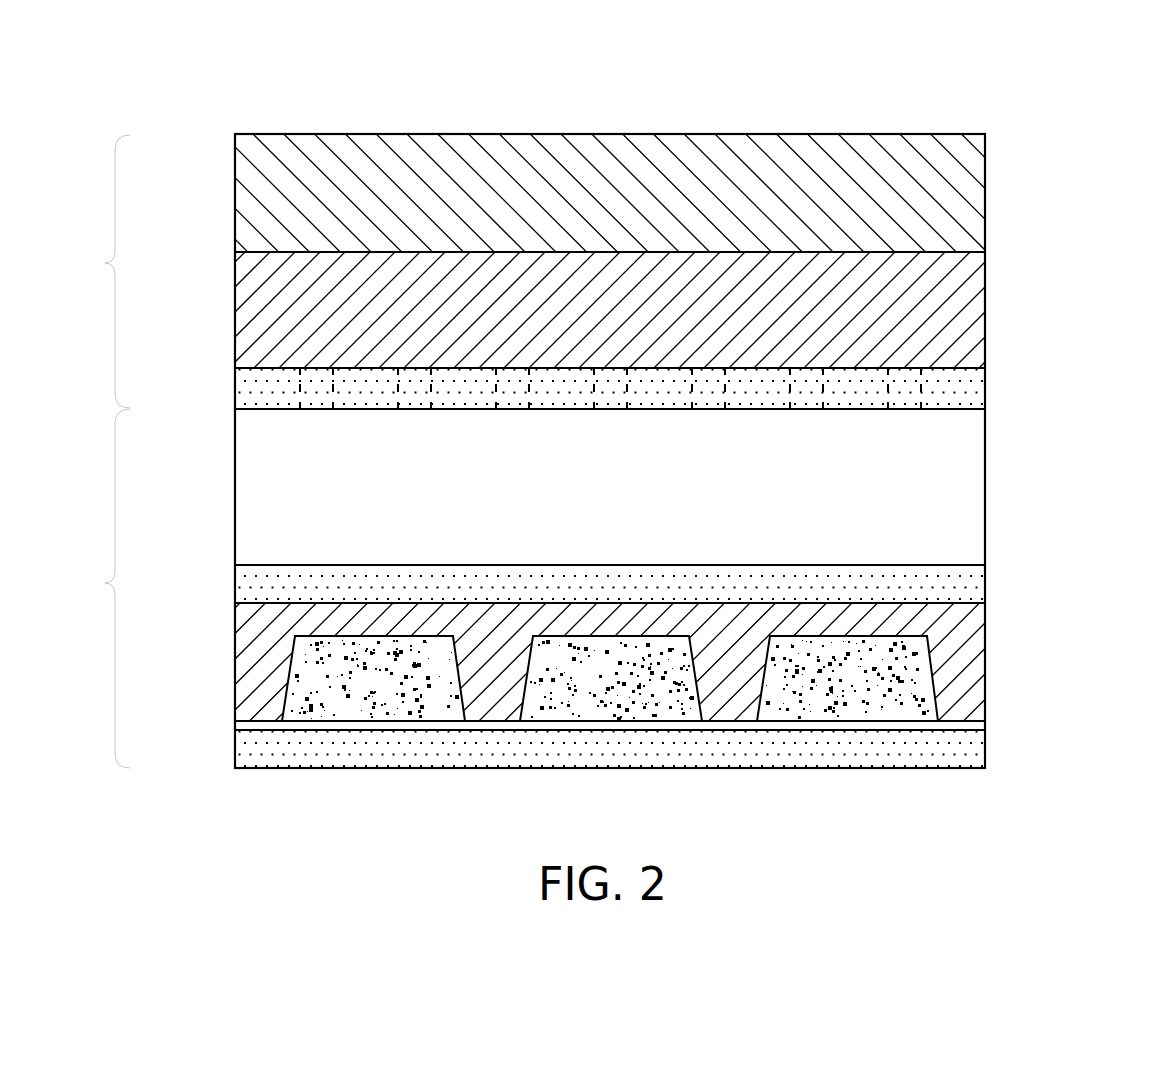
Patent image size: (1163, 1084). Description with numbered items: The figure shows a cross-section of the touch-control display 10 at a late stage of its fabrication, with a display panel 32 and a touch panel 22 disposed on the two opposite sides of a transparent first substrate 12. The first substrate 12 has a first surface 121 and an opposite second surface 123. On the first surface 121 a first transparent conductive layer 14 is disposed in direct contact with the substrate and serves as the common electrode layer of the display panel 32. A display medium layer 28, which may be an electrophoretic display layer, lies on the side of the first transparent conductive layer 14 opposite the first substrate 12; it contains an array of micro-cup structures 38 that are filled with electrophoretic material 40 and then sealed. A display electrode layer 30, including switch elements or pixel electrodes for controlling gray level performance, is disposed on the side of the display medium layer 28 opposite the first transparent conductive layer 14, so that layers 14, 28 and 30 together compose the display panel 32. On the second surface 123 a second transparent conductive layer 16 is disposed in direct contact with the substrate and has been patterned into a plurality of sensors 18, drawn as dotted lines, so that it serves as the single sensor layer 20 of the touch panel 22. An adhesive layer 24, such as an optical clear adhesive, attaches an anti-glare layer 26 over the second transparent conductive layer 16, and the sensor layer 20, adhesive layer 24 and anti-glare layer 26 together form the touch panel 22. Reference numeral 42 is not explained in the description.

The touch-control display 10 is at (1016, 110).
The first substrate 12 is at (649, 482).
The first surface 121 is at (966, 565).
The second surface 123 is at (966, 399).
The first transparent conductive layer 14 is at (970, 585).
The second transparent conductive layer 16 is at (600, 373).
The sensors 18 is at (267, 387).
The sensor layer 20 is at (237, 390).
The touch panel 22 is at (105, 263).
The adhesive layer 24 is at (968, 300).
The anti-glare layer 26 is at (968, 186).
The display medium layer 28 is at (970, 660).
The display electrode layer 30 is at (970, 750).
The display panel 32 is at (105, 583).
The micro-cup structures 38 is at (623, 690).
The electrophoretic material 40 is at (337, 698).
The reflective layer 42 is at (973, 727).